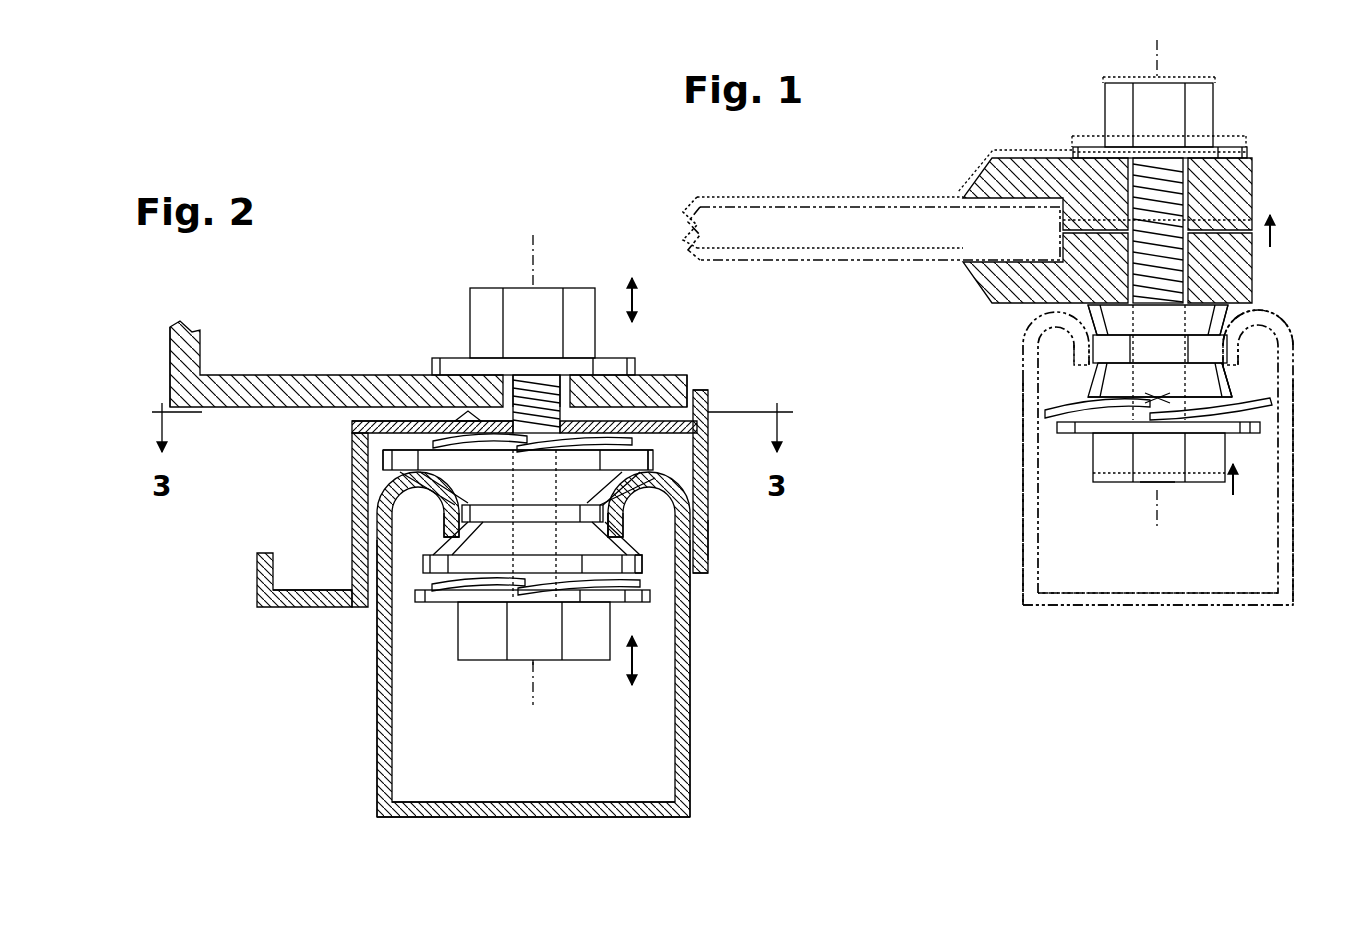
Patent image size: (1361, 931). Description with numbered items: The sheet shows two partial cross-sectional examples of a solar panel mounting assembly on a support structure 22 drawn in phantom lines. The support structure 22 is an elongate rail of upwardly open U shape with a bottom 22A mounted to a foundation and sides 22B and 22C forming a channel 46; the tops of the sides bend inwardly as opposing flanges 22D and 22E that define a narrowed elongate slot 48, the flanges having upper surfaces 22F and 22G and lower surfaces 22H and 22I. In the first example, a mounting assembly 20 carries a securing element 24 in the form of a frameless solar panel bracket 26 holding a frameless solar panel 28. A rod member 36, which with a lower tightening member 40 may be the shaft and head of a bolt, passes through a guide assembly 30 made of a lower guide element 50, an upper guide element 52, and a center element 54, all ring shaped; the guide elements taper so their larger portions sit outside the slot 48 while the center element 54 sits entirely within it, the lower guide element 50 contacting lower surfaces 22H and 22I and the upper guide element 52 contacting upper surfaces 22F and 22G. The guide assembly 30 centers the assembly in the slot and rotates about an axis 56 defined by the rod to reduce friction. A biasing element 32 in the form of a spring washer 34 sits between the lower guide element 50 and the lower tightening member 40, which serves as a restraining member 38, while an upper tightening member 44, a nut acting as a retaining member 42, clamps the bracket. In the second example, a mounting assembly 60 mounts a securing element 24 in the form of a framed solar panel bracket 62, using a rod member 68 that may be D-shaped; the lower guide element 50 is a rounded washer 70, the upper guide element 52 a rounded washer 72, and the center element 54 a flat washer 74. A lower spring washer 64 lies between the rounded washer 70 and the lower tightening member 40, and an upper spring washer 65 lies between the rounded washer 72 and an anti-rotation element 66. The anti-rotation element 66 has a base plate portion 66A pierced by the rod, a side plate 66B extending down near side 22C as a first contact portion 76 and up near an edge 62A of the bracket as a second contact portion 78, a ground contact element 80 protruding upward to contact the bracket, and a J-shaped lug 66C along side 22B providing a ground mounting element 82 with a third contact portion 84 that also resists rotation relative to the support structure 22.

In FIG. 1, the mounting assembly 20 is at (916, 141).
In FIG. 2, the support structure 22 is at (535, 821).
In FIG. 1, the support structure 22 is at (1176, 608).
In FIG. 2, the bottom 22A is at (452, 818).
In FIG. 1, the bottom 22A is at (1070, 607).
In FIG. 2, the side 22B is at (377, 788).
In FIG. 1, the side 22B is at (1022, 578).
In FIG. 2, the side 22C is at (690, 787).
In FIG. 1, the side 22C is at (1295, 570).
In FIG. 2, the flange 22D is at (455, 536).
In FIG. 1, the flange 22D is at (1086, 352).
In FIG. 2, the flange 22E is at (618, 514).
In FIG. 1, the flange 22E is at (1226, 352).
In FIG. 2, the upper surface 22F is at (440, 485).
In FIG. 1, the upper surface 22F is at (1055, 305).
In FIG. 2, the upper surface 22G is at (652, 470).
In FIG. 1, the upper surface 22G is at (1260, 312).
In FIG. 2, the lower surface 22H is at (455, 548).
In FIG. 1, the lower surface 22H is at (1088, 385).
In FIG. 2, the lower surface 22I is at (612, 513).
In FIG. 1, the lower surface 22I is at (1232, 370).
In FIG. 2, the securing element 24 is at (168, 352).
In FIG. 1, the securing element 24 is at (1257, 180).
In FIG. 1, the frameless solar panel bracket 26 is at (1255, 205).
In FIG. 1, the frameless solar panel 28 is at (878, 197).
In FIG. 2, the guide assembly 30 is at (612, 492).
In FIG. 1, the guide assembly 30 is at (1237, 314).
In FIG. 2, the biasing element 32 is at (438, 434).
In FIG. 1, the biasing element 32 is at (1274, 406).
In FIG. 1, the spring washer 34 is at (1266, 422).
In FIG. 1, the rod member 36 is at (1186, 242).
In FIG. 2, the restraining member 38 is at (514, 663).
In FIG. 1, the restraining member 38 is at (1140, 486).
In FIG. 2, the lower tightening member 40 is at (458, 640).
In FIG. 1, the lower tightening member 40 is at (1093, 460).
In FIG. 2, the retaining member 42 is at (468, 330).
In FIG. 1, the retaining member 42 is at (1101, 118).
In FIG. 2, the upper tightening member 44 is at (575, 288).
In FIG. 1, the upper tightening member 44 is at (1215, 118).
In FIG. 2, the channel 46 is at (625, 770).
In FIG. 1, the channel 46 is at (1250, 572).
In FIG. 2, the slot 48 is at (606, 506).
In FIG. 1, the slot 48 is at (1230, 356).
In FIG. 2, the lower guide element 50 is at (420, 564).
In FIG. 1, the lower guide element 50 is at (1088, 398).
In FIG. 2, the upper guide element 52 is at (378, 453).
In FIG. 1, the upper guide element 52 is at (1085, 310).
In FIG. 2, the center element 54 is at (462, 508).
In FIG. 1, the center element 54 is at (1128, 352).
In FIG. 2, the axis 56 is at (527, 258).
In FIG. 1, the axis 56 is at (1163, 45).
In FIG. 2, the mounting assembly 60 is at (350, 332).
In FIG. 2, the framed solar panel bracket 62 is at (178, 360).
In FIG. 2, the edge 62A is at (683, 380).
In FIG. 2, the lower spring washer 64 is at (497, 587).
In FIG. 2, the upper spring washer 65 is at (440, 443).
In FIG. 2, the anti-rotation element 66 is at (712, 561).
In FIG. 2, the base plate portion 66A is at (380, 420).
In FIG. 2, the side plate 66B is at (712, 403).
In FIG. 2, the J-shaped lug 66C is at (352, 480).
In FIG. 2, the rod member 68 is at (562, 396).
In FIG. 2, the rounded washer 70 is at (645, 563).
In FIG. 2, the rounded washer 72 is at (683, 458).
In FIG. 2, the flat washer 74 is at (461, 523).
In FIG. 2, the first contact portion 76 is at (712, 545).
In FIG. 2, the second contact portion 78 is at (695, 395).
In FIG. 2, the ground contact element 80 is at (440, 436).
In FIG. 2, the ground mounting element 82 is at (255, 582).
In FIG. 2, the third contact portion 84 is at (350, 568).